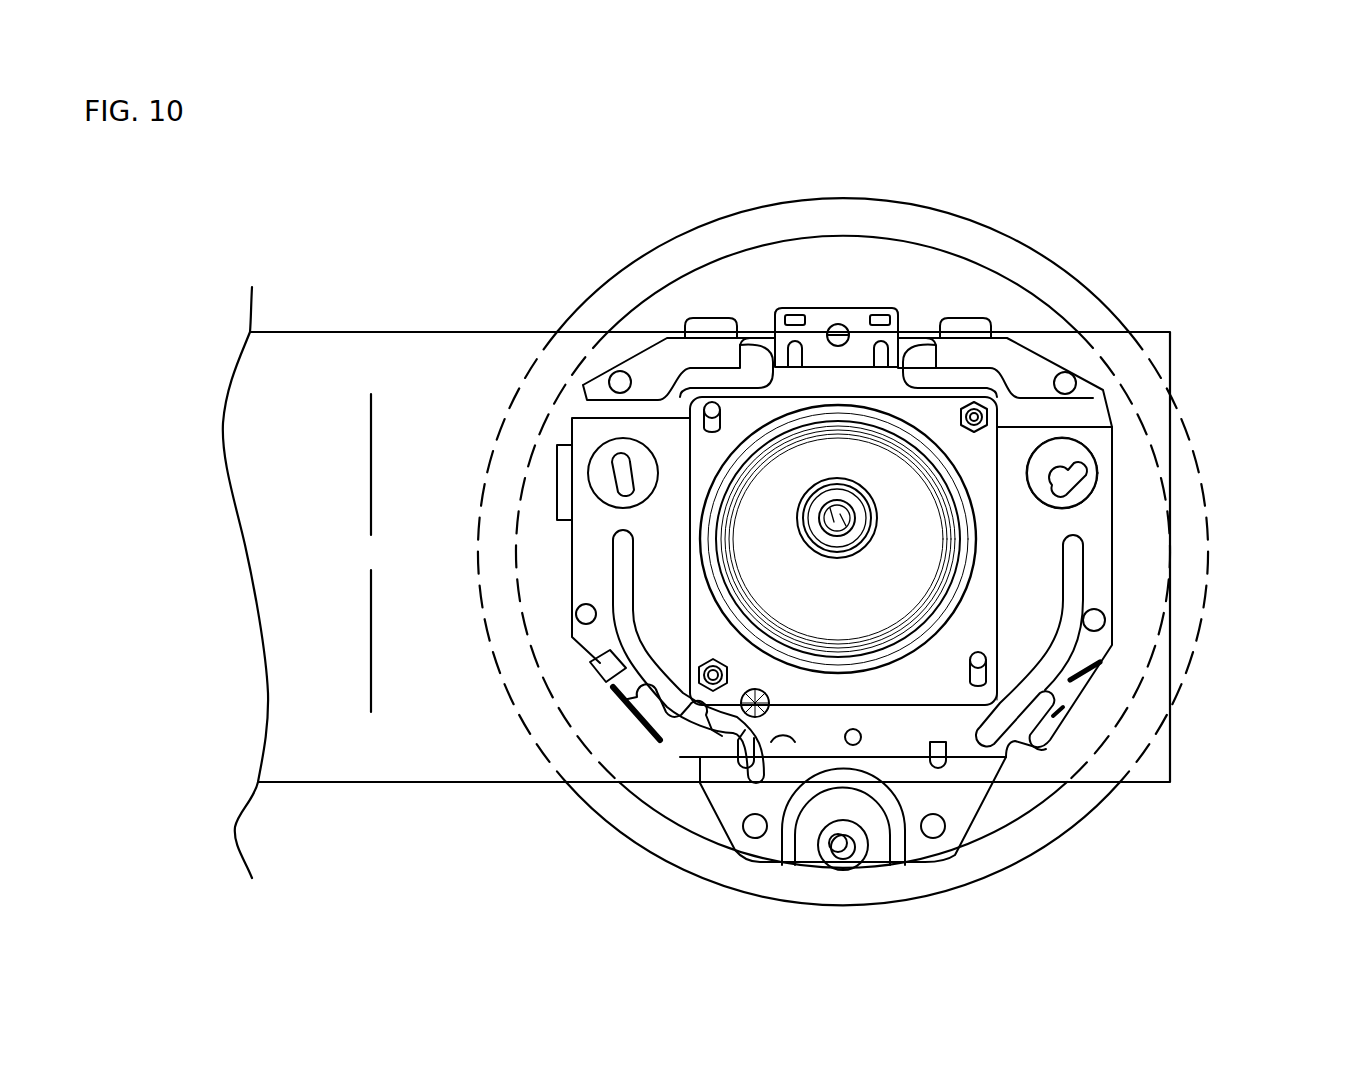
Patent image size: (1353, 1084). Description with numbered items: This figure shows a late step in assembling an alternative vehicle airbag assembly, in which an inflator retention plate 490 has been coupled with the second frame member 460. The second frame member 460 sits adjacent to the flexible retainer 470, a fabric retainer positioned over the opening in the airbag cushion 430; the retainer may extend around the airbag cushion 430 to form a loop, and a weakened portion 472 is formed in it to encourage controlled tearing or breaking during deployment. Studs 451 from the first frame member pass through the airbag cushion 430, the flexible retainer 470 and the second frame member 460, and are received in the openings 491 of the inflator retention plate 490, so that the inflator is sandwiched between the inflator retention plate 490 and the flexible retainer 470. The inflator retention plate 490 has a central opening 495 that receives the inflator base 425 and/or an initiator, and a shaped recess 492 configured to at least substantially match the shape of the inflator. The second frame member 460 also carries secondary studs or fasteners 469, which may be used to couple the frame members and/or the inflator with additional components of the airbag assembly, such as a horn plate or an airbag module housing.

The base 425 is at (855, 488).
The airbag cushion 430 is at (877, 257).
The studs 451 is at (712, 407).
The second frame member 460 is at (955, 790).
The secondary studs or fasteners 469 is at (1085, 452).
The flexible retainer 470 is at (353, 753).
The weakened portion 472 is at (368, 648).
The inflator retention plate 490 is at (880, 530).
The openings 491 is at (990, 673).
The shaped recess 492 is at (783, 483).
The central opening 495 is at (983, 476).